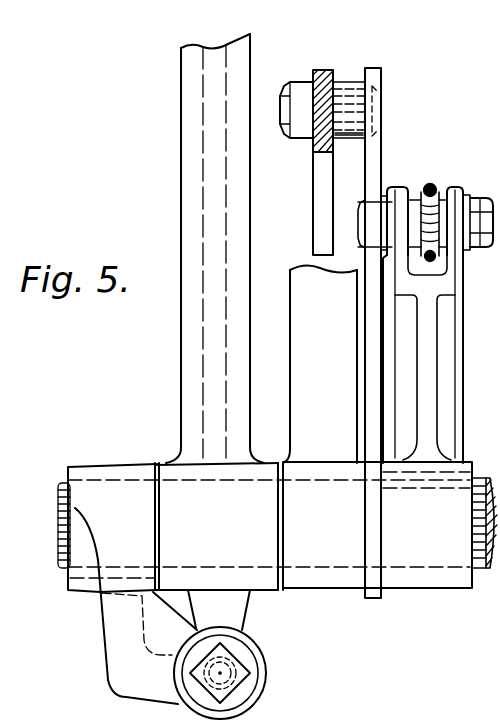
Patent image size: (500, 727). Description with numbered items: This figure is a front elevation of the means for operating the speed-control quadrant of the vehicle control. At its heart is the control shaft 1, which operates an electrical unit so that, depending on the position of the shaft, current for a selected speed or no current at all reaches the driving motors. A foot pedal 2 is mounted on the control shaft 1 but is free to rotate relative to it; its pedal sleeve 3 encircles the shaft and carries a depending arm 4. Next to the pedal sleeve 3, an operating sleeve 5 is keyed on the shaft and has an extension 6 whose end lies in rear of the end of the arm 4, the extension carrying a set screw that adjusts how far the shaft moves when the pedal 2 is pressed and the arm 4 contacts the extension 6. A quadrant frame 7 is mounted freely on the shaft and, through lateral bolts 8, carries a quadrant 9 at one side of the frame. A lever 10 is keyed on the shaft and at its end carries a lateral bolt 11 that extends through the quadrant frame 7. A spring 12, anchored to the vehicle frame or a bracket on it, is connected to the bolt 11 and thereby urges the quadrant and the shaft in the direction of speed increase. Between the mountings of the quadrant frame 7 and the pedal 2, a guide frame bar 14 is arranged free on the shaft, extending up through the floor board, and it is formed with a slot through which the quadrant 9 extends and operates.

The control shaft 1 is at (482, 572).
The foot pedal 2 is at (181, 348).
The pedal sleeve 3 is at (168, 462).
The depending arm 4 is at (232, 613).
The operating sleeve 5 is at (83, 463).
The extension 6 is at (100, 631).
The quadrant frame 7 is at (382, 142).
The lateral bolts 8 is at (277, 100).
The quadrant 9 is at (313, 181).
The lever 10 is at (457, 363).
The lateral bolt 11 is at (493, 203).
The spring 12 is at (428, 185).
The guide frame bar 14 is at (320, 364).